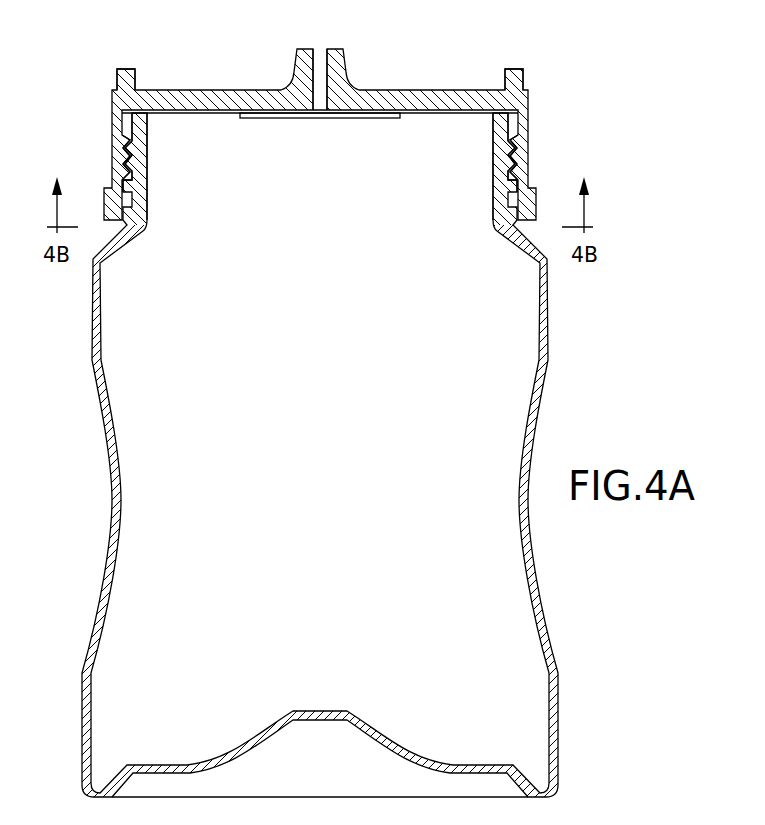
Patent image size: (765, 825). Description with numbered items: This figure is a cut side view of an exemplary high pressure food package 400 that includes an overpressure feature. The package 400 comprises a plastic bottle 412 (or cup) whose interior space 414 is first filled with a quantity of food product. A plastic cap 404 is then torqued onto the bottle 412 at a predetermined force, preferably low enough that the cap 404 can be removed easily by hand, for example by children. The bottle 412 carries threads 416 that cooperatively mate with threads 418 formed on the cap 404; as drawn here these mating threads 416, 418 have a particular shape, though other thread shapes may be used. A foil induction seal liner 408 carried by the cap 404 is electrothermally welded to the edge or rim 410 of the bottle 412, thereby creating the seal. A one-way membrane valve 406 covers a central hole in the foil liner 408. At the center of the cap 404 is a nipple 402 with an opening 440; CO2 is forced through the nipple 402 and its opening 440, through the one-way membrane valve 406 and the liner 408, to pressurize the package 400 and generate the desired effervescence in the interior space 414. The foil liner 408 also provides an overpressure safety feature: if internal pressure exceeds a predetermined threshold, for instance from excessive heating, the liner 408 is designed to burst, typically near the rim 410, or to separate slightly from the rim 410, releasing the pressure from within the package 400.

The package 400 is at (382, 412).
The nipple 402 is at (323, 112).
The plastic cap 404 is at (127, 68).
The one-way membrane valve 406 is at (318, 120).
The foil induction seal liner 408 is at (230, 116).
The rim 410 is at (140, 120).
The plastic bottle 412 is at (382, 412).
The interior space 414 is at (338, 440).
The threads 416 is at (133, 183).
The threads 418 is at (126, 155).
The opening 440 is at (322, 62).